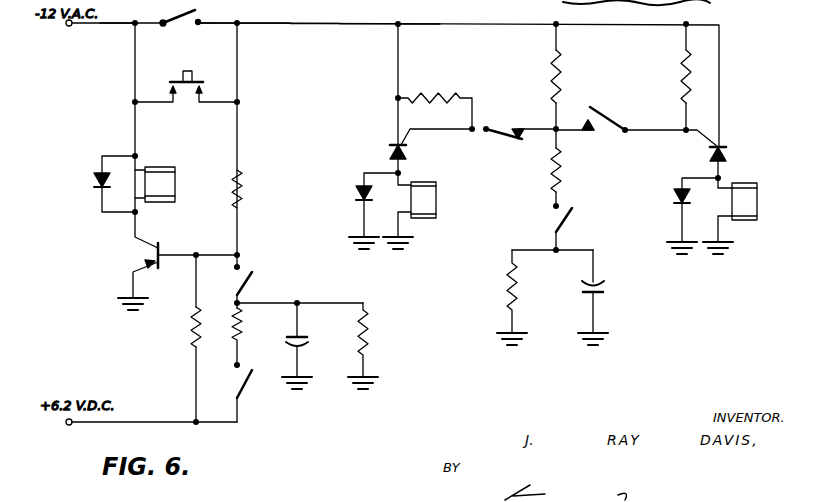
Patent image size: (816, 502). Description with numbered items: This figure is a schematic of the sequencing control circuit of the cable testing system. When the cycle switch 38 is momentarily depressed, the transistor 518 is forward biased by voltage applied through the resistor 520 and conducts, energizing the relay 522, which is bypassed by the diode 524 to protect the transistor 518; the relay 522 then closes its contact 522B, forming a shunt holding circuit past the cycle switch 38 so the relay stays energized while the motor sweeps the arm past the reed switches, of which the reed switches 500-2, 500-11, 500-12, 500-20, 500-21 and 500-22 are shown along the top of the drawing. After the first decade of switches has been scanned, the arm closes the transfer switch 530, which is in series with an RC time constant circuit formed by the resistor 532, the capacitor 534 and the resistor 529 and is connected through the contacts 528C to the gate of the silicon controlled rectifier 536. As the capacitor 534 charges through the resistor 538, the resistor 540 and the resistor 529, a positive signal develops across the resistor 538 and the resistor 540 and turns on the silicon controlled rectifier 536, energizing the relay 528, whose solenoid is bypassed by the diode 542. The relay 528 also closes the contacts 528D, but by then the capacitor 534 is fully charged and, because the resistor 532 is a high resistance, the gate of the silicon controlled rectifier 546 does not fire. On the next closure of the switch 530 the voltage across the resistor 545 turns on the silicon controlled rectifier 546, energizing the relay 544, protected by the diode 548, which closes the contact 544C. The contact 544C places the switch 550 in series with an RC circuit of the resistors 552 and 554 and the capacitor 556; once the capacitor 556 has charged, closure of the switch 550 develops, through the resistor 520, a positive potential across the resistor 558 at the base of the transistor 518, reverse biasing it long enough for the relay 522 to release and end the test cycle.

The cycle switch 38 is at (193, 78).
The transistor 518 is at (152, 258).
The resistor 520 is at (241, 186).
The relay 522 is at (158, 167).
The contact 522B is at (191, 26).
The diode 524 is at (95, 179).
The relay 528 is at (436, 186).
The contacts 528C is at (492, 126).
The contacts 528D is at (603, 112).
The resistor 529 is at (566, 188).
The transfer switch 530 is at (574, 226).
The resistor 532 is at (516, 284).
The capacitor 534 is at (603, 286).
The silicon controlled rectifier 536 is at (390, 156).
The resistor 538 is at (437, 95).
The resistor 540 is at (553, 80).
The diode 542 is at (356, 200).
The relay 544 is at (757, 185).
The contact 544C is at (245, 388).
The resistor 545 is at (683, 75).
The silicon controlled rectifier 546 is at (727, 156).
The diode 548 is at (672, 196).
The switch 550 is at (246, 286).
The resistor 552 is at (242, 324).
The resistor 554 is at (368, 325).
The capacitor 556 is at (301, 337).
The resistor 558 is at (192, 333).
The reed switch 500-2 is at (127, 12).
The reed switch 500-11 is at (226, 12).
The reed switch 500-12 is at (268, 11).
The reed switch 500-20 is at (312, 15).
The reed switch 500-21 is at (366, 12).
The reed switch 500-22 is at (414, 15).